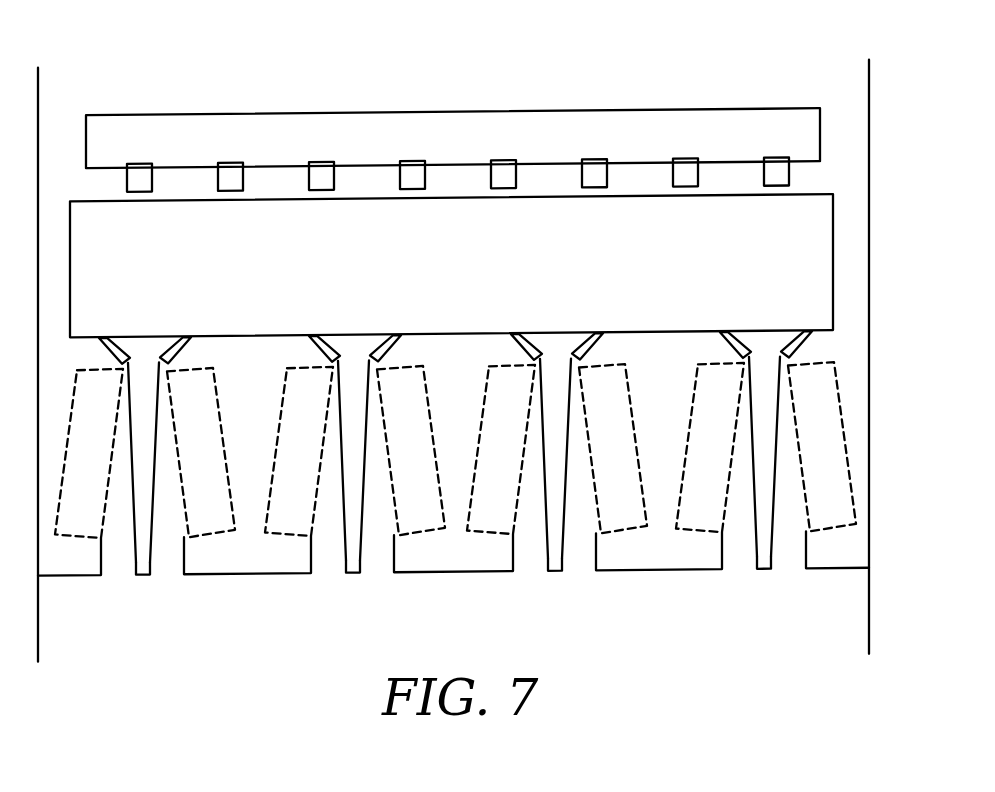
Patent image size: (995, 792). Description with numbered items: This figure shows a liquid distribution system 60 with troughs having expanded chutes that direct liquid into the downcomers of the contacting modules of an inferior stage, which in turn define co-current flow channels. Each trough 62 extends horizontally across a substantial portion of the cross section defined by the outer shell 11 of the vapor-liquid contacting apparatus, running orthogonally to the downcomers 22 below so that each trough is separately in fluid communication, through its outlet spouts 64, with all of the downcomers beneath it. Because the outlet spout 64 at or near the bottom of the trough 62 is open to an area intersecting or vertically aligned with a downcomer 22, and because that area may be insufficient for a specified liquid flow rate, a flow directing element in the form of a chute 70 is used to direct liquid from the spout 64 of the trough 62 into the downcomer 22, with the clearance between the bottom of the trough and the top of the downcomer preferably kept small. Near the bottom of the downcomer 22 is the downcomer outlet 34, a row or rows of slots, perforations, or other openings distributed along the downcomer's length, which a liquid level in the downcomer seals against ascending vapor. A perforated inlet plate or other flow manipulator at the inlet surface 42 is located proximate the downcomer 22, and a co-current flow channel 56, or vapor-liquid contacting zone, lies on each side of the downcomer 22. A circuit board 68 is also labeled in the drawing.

The outer shell 11 is at (869, 81).
The liquid distribution system 60 is at (451, 176).
The circuit board 68 is at (469, 155).
The trough 62 is at (469, 279).
The outlet spout 64 is at (476, 325).
The chute 70 is at (801, 352).
The downcomer 22 is at (454, 482).
The downcomer outlet 34 is at (350, 573).
The inlet surface 42 is at (214, 384).
The co-current flow channel 56 is at (593, 544).